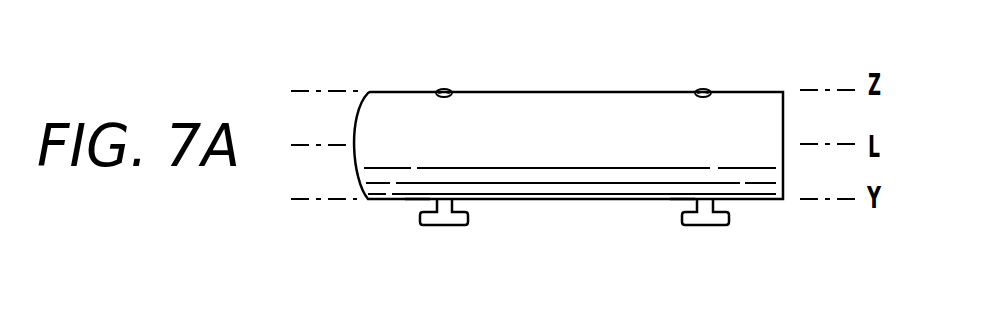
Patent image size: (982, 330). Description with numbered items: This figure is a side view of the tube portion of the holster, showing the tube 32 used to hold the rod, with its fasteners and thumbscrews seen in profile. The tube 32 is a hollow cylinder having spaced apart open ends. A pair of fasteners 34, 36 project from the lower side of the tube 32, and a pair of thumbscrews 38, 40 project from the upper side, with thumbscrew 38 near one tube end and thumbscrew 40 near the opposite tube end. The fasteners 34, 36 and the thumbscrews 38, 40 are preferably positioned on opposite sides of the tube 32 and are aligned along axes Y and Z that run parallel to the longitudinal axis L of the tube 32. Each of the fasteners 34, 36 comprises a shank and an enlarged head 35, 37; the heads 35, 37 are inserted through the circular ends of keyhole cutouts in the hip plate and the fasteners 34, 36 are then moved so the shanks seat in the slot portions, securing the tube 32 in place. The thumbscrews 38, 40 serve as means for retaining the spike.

The tube 32 is at (534, 80).
The fastener 34 is at (410, 210).
The enlarged head 35 is at (468, 219).
The fastener 36 is at (675, 209).
The enlarged head 37 is at (729, 219).
The thumbscrew 38 is at (445, 90).
The thumbscrew 40 is at (703, 90).